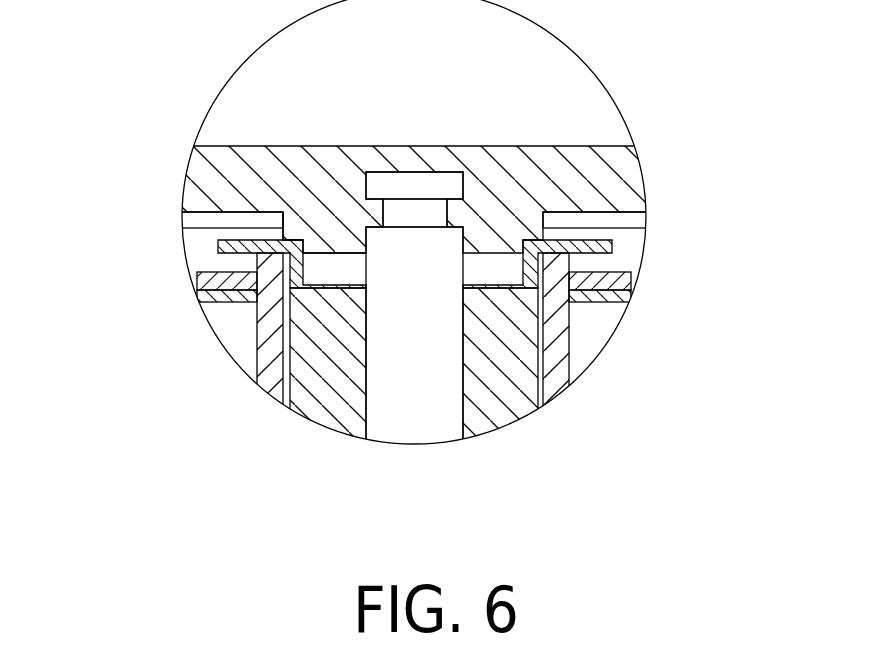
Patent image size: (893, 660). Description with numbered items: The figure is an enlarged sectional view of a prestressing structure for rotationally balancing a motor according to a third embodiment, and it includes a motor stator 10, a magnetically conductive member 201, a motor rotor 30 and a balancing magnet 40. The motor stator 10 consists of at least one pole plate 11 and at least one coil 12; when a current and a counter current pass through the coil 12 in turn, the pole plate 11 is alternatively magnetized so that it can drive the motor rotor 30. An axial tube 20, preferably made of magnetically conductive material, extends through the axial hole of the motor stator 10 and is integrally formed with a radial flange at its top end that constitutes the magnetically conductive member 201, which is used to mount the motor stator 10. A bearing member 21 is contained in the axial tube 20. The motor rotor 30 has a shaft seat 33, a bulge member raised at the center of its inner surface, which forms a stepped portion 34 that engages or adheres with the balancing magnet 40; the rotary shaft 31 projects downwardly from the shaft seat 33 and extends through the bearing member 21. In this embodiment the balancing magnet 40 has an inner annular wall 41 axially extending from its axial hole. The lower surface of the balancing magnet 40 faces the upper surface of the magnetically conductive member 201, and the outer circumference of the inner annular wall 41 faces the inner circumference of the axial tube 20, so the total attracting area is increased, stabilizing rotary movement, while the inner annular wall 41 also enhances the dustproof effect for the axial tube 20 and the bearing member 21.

The motor stator 10 is at (625, 322).
The pole plate 11 is at (630, 282).
The coil 12 is at (580, 356).
The axial tube 20 is at (278, 385).
The magnetically conductive member 201 is at (245, 261).
The bearing member 21 is at (347, 383).
The motor rotor 30 is at (562, 137).
The rotary shaft 31 is at (428, 255).
The shaft seat 33 is at (342, 228).
The stepped portion 34 is at (302, 236).
The balancing magnet 40 is at (217, 213).
The inner annular wall 41 is at (203, 292).